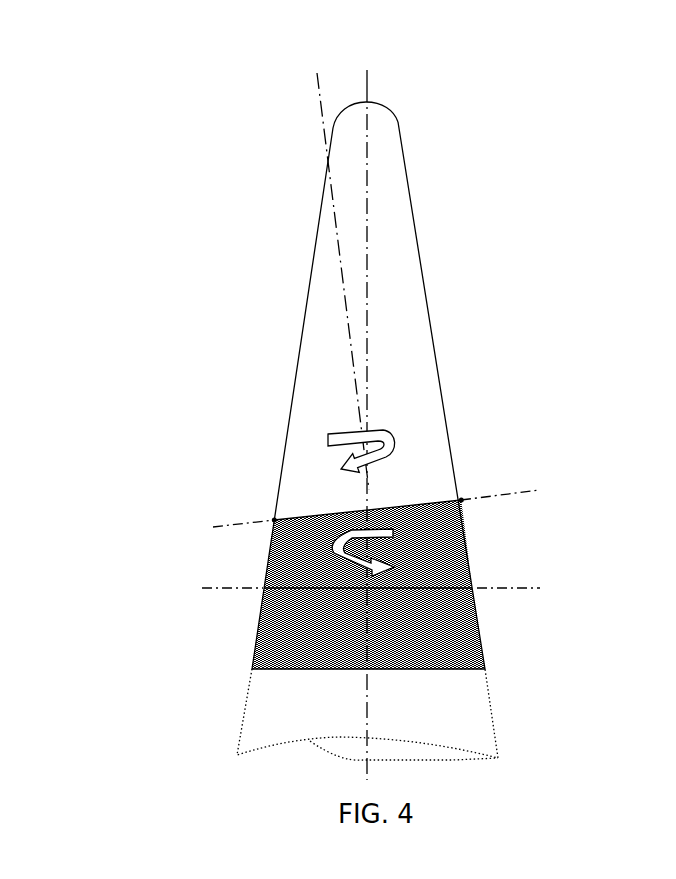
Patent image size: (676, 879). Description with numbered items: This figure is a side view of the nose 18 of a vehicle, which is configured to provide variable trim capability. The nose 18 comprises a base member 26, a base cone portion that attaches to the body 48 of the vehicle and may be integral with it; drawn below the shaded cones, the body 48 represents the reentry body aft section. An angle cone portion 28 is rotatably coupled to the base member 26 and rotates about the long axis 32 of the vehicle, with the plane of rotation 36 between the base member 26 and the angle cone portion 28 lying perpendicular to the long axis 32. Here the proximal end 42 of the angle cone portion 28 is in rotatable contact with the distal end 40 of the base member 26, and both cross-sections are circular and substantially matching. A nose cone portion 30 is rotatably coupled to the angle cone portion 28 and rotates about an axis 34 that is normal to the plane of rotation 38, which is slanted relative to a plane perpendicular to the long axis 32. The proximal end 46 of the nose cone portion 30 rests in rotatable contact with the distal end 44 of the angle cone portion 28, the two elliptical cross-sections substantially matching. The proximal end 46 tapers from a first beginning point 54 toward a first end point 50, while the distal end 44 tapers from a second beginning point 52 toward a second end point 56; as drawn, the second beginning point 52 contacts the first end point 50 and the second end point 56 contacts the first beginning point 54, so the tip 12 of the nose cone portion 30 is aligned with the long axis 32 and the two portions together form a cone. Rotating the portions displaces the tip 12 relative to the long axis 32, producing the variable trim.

The tip 12 is at (380, 128).
The nose 18 is at (68, 154).
The base member 26 is at (226, 643).
The angle cone portion 28 is at (570, 538).
The nose cone portion 30 is at (505, 314).
The long axis 32 is at (370, 79).
The axis 34 is at (317, 83).
The plane of rotation 36 is at (202, 588).
The plane of rotation 38 is at (213, 527).
The distal end 40 is at (473, 595).
The proximal end 42 is at (445, 577).
The distal end 44 is at (463, 518).
The proximal end 46 is at (432, 492).
The body 48 is at (473, 733).
The first end point 50 is at (274, 520).
The second beginning point 52 is at (274, 520).
The first beginning point 54 is at (461, 500).
The second end point 56 is at (463, 502).